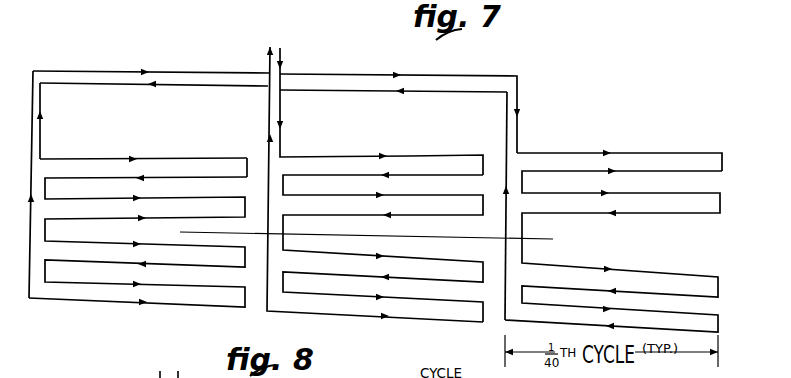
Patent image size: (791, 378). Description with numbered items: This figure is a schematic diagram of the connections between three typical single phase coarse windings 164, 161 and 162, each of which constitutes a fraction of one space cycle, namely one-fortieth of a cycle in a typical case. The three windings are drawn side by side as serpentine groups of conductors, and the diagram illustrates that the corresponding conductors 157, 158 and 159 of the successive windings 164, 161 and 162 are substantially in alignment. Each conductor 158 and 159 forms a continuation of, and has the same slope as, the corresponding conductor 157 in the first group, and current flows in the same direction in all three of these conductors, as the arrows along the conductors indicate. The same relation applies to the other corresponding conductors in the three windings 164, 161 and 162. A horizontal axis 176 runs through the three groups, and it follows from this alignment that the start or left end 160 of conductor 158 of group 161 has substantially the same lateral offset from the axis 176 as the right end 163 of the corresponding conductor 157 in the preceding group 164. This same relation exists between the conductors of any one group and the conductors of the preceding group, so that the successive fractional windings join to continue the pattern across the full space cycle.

The conductor 157 is at (97, 158).
The single phase coarse winding 164 is at (173, 158).
The right end of conductor 163 is at (247, 160).
The left end of conductor 160 is at (281, 157).
The single phase coarse winding 161 is at (360, 156).
The conductor 158 is at (440, 156).
The conductor 159 is at (568, 153).
The single phase coarse winding 162 is at (657, 153).
The axis 176 is at (447, 240).